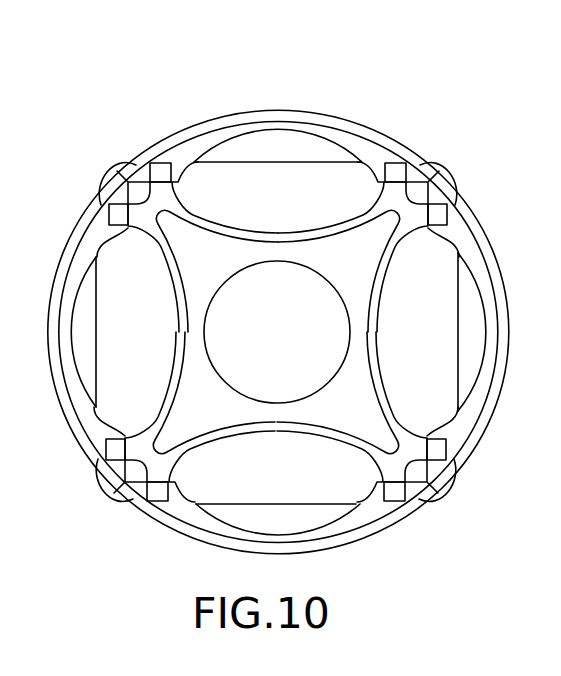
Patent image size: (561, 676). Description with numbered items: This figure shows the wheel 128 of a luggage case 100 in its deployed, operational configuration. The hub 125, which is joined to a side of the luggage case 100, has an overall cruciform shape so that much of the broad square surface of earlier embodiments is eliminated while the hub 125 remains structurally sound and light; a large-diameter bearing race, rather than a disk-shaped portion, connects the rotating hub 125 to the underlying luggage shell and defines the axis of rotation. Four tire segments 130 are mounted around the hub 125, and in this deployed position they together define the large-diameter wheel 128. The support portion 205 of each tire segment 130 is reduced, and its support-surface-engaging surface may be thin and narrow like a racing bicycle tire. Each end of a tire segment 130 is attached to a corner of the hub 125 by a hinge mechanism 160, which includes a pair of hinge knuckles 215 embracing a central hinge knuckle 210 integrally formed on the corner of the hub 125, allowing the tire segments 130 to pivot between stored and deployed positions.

The luggage case 100 is at (283, 294).
The hub 125 is at (358, 263).
The wheel 128 is at (386, 132).
The tire segment 130 is at (300, 113).
The hinge mechanism 160 is at (447, 217).
The support portion 205 is at (195, 145).
The central hinge knuckle 210 is at (114, 450).
The hinge knuckles 215 is at (146, 158).